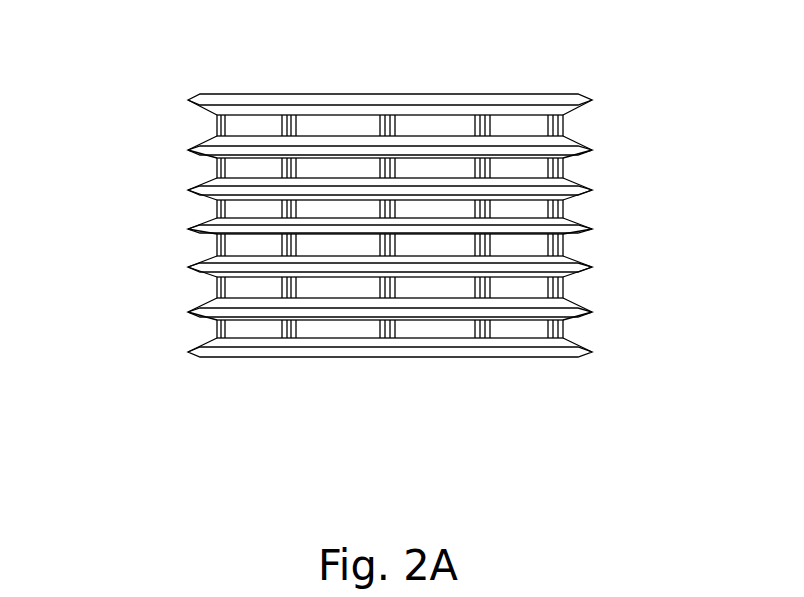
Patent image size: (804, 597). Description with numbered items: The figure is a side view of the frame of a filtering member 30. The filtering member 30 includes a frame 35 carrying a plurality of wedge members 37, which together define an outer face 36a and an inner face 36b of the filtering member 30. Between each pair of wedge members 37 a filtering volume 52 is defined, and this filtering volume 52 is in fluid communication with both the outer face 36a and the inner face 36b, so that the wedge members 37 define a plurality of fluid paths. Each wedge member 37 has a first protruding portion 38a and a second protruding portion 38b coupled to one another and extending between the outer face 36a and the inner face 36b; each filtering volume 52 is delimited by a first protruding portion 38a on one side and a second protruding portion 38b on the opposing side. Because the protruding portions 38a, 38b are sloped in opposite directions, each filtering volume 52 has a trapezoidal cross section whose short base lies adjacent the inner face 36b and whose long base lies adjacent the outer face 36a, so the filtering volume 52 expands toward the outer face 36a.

The filtering member 30 is at (207, 382).
The frame 35 is at (283, 337).
The outer face 36a is at (177, 112).
The inner face 36b is at (240, 113).
The wedge member 37 is at (195, 350).
The first protruding portion 38a is at (187, 152).
The second protruding portion 38b is at (190, 185).
The filtering volume 52 is at (200, 285).